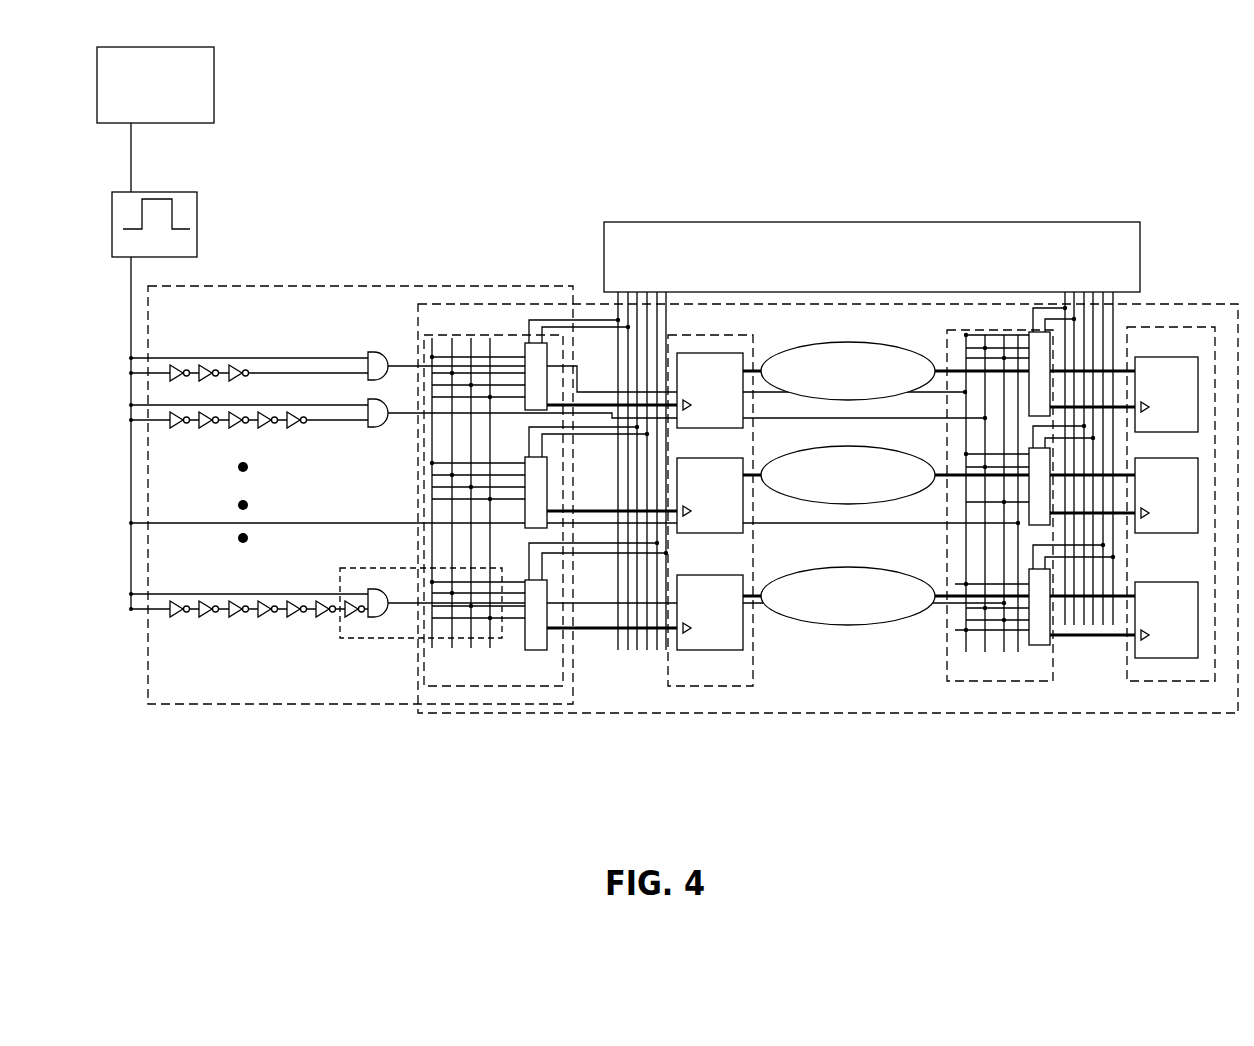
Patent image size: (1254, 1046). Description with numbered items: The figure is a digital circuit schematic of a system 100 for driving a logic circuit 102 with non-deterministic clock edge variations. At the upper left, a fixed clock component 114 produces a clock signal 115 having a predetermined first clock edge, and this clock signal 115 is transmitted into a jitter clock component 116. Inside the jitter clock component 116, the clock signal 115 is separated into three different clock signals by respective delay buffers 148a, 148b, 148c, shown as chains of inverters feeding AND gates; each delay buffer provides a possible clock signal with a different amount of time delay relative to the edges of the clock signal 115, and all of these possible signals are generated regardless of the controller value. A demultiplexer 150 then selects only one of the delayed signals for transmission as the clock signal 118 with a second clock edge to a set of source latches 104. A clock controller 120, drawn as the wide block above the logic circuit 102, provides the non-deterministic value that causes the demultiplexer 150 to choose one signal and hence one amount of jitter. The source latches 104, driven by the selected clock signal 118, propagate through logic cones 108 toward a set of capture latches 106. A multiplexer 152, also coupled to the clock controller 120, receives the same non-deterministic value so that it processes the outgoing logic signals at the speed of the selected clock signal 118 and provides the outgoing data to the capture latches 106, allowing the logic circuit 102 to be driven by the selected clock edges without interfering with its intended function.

The system 100 is at (280, 71).
The logic circuit 102 is at (875, 717).
The source latches 104 is at (703, 688).
The capture latches 106 is at (1172, 684).
The logic cones 108 is at (895, 483).
The fixed clock component 114 is at (155, 85).
The clock signal 115 is at (218, 189).
The jitter clock component 116 is at (265, 705).
The clock signal 118 is at (588, 404).
The clock controller 120 is at (872, 257).
The delay buffer 148a is at (235, 378).
The delay buffer 148b is at (297, 421).
The delay buffer 148c is at (267, 610).
The demultiplexer 150 is at (505, 686).
The multiplexer 152 is at (1040, 683).